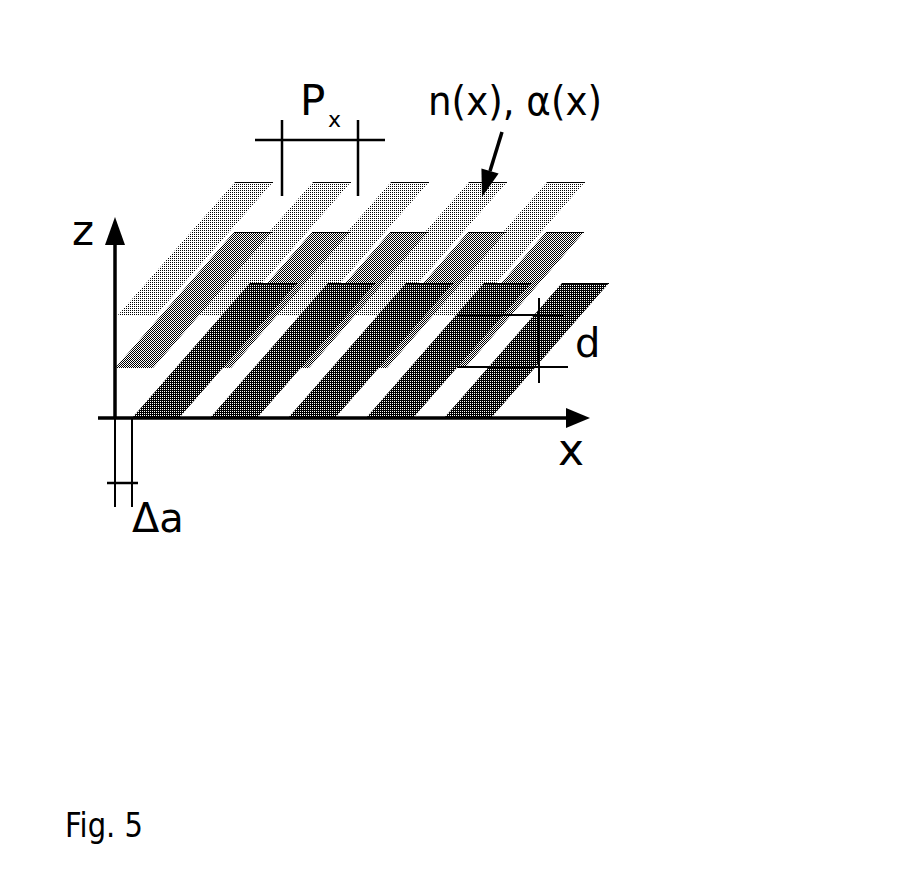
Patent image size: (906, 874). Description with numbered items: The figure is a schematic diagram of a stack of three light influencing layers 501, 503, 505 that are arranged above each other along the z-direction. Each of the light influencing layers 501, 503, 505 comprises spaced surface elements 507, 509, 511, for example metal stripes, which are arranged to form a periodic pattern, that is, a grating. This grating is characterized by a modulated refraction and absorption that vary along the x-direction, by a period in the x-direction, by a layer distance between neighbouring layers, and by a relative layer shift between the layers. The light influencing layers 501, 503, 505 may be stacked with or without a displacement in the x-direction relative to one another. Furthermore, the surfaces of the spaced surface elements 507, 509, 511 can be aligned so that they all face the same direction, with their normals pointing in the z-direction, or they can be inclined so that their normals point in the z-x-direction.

The light influencing layer 501 is at (603, 192).
The light influencing layer 503 is at (588, 264).
The light influencing layer 505 is at (549, 394).
The spaced surface elements 507 is at (573, 182).
The spaced surface elements 509 is at (565, 232).
The spaced surface elements 511 is at (580, 309).